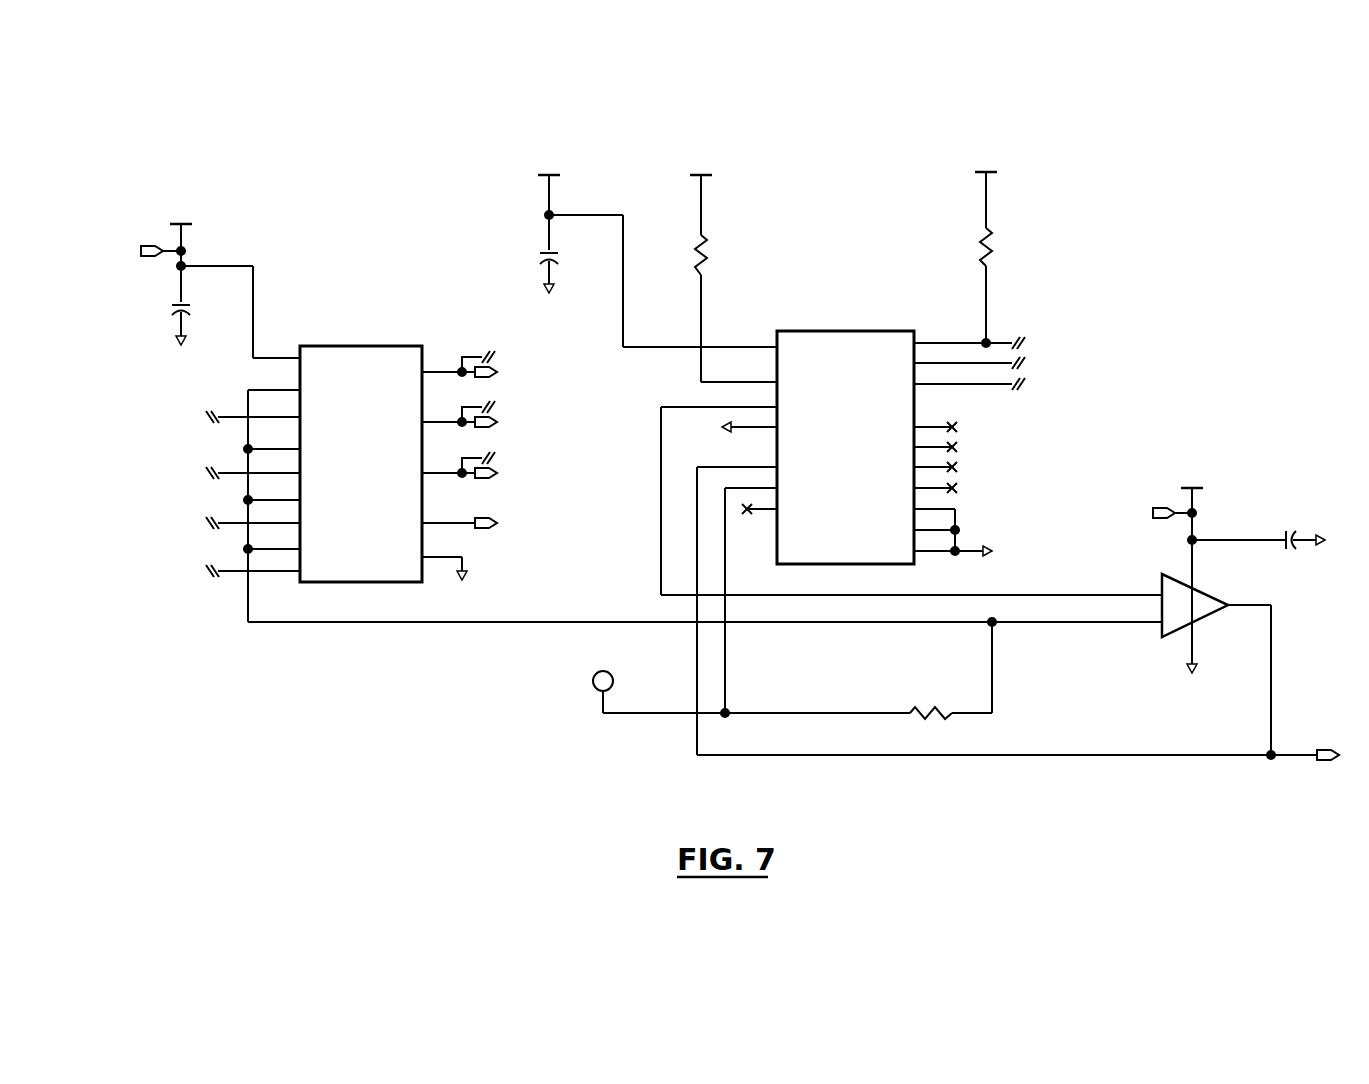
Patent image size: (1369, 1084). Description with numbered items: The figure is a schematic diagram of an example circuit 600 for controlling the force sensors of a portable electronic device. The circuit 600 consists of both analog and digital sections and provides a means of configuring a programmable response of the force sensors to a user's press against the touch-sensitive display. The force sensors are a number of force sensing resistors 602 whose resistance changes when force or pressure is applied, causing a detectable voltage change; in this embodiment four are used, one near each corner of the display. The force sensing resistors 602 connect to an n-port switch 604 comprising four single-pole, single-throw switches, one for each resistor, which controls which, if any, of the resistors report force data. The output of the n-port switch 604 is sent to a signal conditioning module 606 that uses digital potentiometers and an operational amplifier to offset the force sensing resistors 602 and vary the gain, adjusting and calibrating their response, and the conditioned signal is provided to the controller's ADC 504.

The circuit 600 is at (1165, 250).
The force sensing resistors 602 is at (210, 616).
The n-port switch 604 is at (374, 346).
The signal conditioning module 606 is at (830, 331).
The ADC 504 is at (1162, 625).